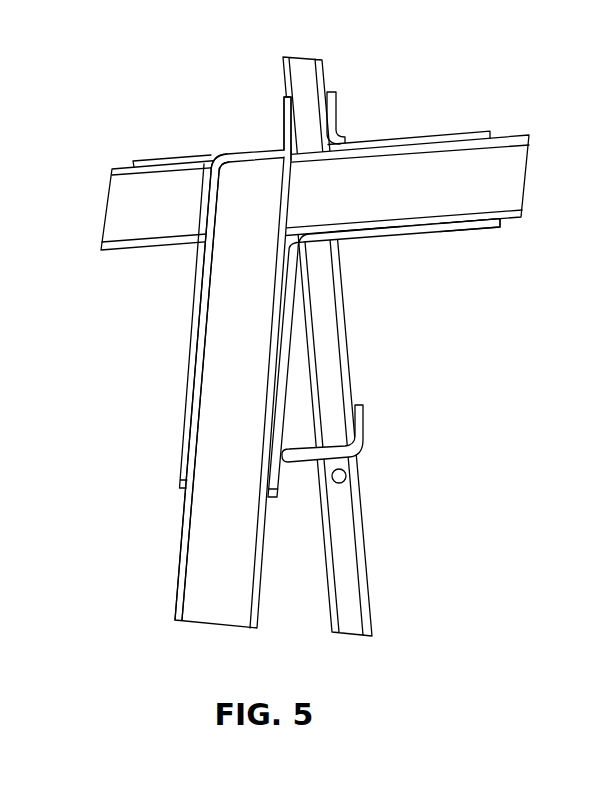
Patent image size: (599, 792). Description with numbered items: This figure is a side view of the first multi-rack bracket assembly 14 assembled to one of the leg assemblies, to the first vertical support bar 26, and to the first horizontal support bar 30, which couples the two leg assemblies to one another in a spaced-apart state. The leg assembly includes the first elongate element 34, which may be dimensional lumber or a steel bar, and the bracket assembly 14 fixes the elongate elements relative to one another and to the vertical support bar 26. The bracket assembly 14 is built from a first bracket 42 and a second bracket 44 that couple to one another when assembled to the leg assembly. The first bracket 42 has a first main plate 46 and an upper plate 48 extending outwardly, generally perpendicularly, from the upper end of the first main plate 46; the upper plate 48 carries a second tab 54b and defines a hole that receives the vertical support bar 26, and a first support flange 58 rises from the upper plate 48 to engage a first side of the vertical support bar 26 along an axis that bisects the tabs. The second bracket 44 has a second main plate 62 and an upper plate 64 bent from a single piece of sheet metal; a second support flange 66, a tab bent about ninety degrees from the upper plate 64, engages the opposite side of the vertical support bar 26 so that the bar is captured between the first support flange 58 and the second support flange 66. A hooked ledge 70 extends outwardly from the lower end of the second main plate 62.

The first multi-rack bracket assembly 14 is at (433, 55).
The first vertical support bar 26 is at (313, 79).
The first horizontal support bar 30 is at (123, 217).
The first elongate element 34 is at (202, 582).
The first bracket 42 is at (199, 329).
The second bracket 44 is at (367, 241).
The first main plate 46 is at (188, 386).
The upper plate 48 is at (458, 133).
The second tab 54b is at (163, 157).
The first support flange 58 is at (339, 118).
The second main plate 62 is at (289, 333).
The upper plate 64 is at (443, 233).
The second support flange 66 is at (280, 126).
The ledge 70 is at (365, 427).